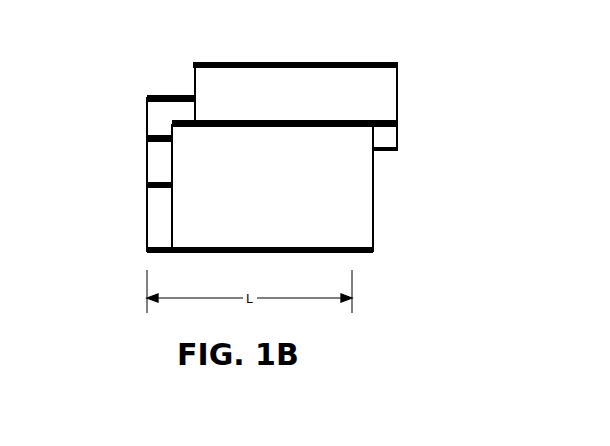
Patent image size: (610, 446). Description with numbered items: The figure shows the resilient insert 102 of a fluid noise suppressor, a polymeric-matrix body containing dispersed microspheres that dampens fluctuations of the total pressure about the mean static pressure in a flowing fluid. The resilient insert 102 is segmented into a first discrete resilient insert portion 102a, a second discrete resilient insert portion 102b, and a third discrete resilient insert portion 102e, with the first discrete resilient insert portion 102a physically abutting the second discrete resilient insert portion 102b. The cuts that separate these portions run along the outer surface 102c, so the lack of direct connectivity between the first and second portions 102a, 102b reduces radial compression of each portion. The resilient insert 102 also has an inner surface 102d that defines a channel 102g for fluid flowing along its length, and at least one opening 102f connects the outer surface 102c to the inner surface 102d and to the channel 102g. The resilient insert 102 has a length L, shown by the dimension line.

The resilient insert 102 is at (318, 62).
The first discrete resilient insert portion 102a is at (382, 90).
The second discrete resilient insert portion 102b is at (143, 98).
The outer surface 102c is at (155, 240).
The inner surface 102d is at (372, 246).
The third discrete resilient insert portion 102e is at (372, 63).
The opening 102f is at (147, 160).
The channel 102g is at (148, 172).